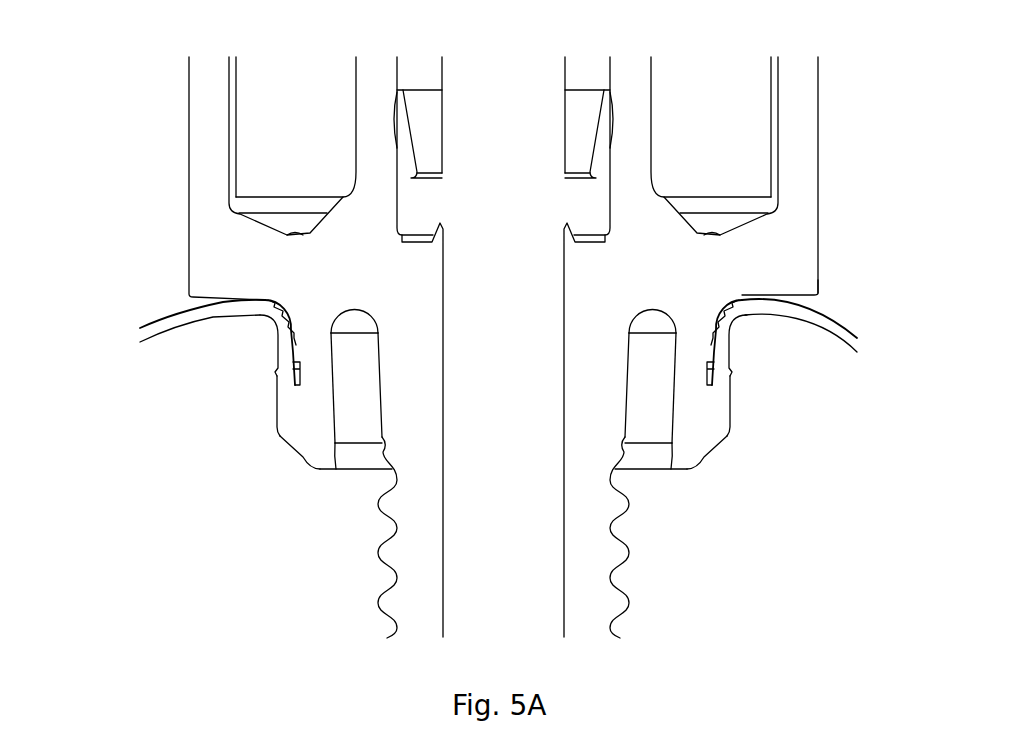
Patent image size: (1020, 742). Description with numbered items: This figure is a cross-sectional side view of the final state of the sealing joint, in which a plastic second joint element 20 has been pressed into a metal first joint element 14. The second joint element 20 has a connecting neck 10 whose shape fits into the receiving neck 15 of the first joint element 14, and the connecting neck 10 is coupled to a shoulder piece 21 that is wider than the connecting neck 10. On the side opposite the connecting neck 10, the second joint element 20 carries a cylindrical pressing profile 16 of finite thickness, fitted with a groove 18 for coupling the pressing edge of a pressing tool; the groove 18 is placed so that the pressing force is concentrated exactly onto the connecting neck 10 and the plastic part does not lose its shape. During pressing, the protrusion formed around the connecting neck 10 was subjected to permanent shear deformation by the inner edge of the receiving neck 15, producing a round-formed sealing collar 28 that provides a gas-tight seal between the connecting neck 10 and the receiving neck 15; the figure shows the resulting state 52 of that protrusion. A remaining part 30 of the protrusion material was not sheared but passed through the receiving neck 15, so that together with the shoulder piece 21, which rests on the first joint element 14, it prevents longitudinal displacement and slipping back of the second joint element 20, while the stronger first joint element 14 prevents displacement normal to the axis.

The connecting neck 10 is at (733, 333).
The first joint element 14 is at (847, 316).
The receiving neck 15 is at (733, 327).
The pressing profile 16 is at (753, 127).
The groove 18 is at (713, 233).
The second joint element 20 is at (820, 247).
The shoulder piece 21 is at (820, 293).
The sealing collar 28 is at (731, 370).
The remaining part of the protrusion material 30 is at (731, 403).
The state of the protrusion 52 is at (721, 437).